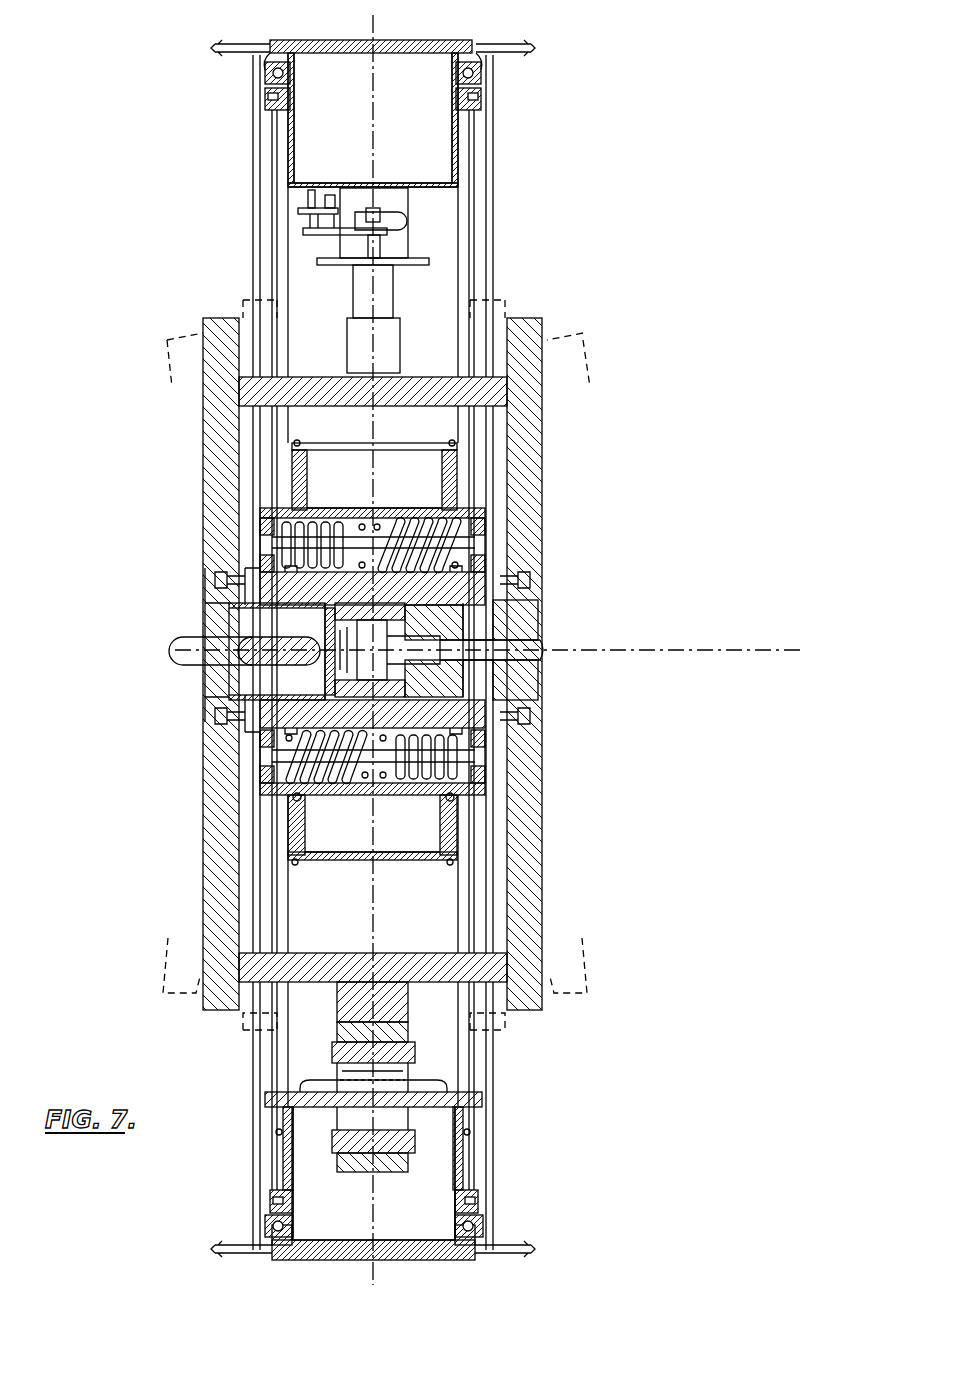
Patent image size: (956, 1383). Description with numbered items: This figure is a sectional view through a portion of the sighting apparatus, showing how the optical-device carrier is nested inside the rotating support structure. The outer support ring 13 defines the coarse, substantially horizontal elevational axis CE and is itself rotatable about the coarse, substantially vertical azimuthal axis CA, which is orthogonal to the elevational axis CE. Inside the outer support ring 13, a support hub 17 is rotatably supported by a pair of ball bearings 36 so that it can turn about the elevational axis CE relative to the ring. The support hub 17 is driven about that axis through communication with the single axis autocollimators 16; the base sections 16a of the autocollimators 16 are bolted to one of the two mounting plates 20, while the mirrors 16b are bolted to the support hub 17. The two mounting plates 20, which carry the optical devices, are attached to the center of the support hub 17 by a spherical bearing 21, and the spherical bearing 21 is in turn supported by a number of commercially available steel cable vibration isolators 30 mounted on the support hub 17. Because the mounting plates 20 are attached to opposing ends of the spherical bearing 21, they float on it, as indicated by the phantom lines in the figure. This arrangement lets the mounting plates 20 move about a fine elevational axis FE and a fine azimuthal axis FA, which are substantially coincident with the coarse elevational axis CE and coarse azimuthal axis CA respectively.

The outer support ring 13 is at (357, 53).
The single axis autocollimator 16 is at (305, 243).
The base section 16a is at (353, 317).
The mirror 16b is at (408, 257).
The support hub 17 is at (407, 182).
The mounting plate 20 is at (203, 886).
The spherical bearing 21 is at (365, 657).
The steel cable vibration isolator 30 is at (262, 525).
The ball bearing 36 is at (263, 67).
The azimuthal axis FA is at (370, 22).
The azimuthal axis CA is at (376, 30).
The elevational axis FE is at (766, 649).
The elevational axis CE is at (797, 652).